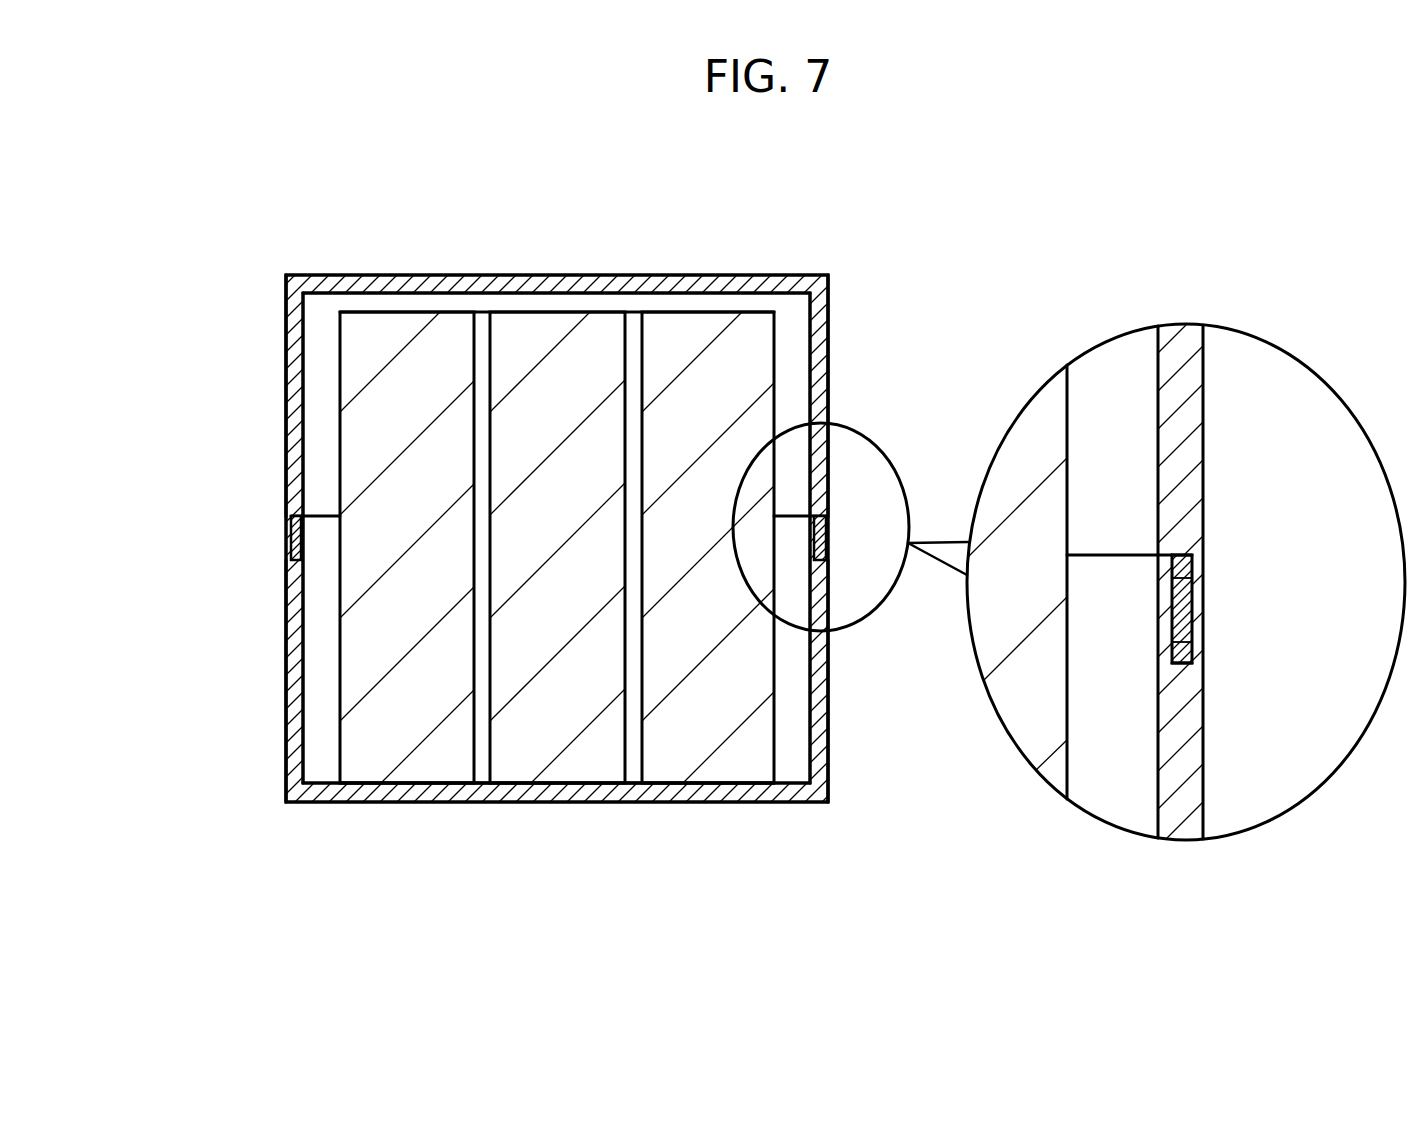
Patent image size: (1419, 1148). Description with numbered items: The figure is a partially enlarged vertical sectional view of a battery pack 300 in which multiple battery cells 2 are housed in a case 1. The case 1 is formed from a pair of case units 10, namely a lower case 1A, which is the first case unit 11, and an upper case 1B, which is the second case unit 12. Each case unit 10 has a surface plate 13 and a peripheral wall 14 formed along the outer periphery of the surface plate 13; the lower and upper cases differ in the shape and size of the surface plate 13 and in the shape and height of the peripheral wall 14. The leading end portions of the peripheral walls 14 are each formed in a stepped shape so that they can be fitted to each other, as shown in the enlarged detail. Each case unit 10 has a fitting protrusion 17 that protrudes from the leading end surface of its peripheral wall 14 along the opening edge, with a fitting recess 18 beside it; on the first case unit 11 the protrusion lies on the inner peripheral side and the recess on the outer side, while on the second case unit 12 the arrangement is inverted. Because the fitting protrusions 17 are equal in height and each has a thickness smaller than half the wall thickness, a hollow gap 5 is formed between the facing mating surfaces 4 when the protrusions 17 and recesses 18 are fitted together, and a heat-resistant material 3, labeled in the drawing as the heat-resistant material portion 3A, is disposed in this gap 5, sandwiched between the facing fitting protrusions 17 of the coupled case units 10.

The battery pack 300 is at (893, 217).
The case 1 is at (170, 398).
The lower case 1A is at (252, 673).
The upper case 1B is at (252, 423).
The battery cell 2 is at (387, 523).
The heat-resistant material 3 is at (691, 629).
The terminal portion 3A is at (290, 537).
The mating surface 4 is at (1174, 590).
The gap 5 is at (1190, 603).
The case unit 10 is at (557, 540).
The first case unit 11 is at (275, 884).
The second case unit 12 is at (837, 192).
The surface plate 13 is at (515, 284).
The peripheral wall 14 is at (293, 360).
The fitting protrusion 17 is at (1190, 588).
The fitting recess 18 is at (1189, 541).